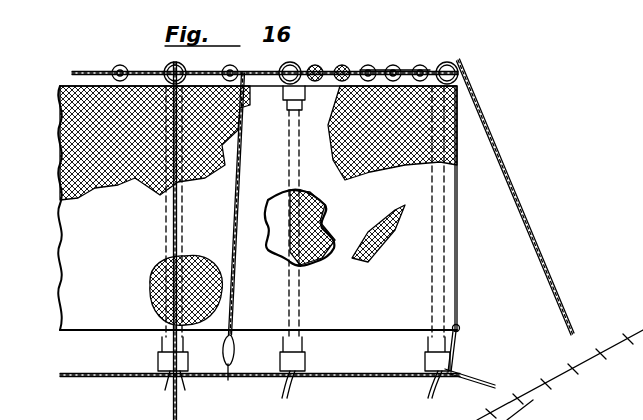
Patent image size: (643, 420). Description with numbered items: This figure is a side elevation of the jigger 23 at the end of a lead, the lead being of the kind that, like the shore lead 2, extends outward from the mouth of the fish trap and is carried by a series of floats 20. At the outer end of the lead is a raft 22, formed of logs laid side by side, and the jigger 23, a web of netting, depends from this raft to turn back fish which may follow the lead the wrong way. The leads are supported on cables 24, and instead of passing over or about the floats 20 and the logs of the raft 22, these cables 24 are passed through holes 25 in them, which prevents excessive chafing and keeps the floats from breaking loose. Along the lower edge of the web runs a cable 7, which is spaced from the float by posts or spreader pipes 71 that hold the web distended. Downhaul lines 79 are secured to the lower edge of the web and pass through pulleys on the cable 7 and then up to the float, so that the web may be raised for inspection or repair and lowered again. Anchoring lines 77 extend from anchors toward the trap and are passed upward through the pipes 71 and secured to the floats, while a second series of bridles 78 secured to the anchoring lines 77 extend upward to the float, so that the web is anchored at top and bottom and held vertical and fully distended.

The shore lead 2 is at (636, 340).
The cable 7 is at (370, 377).
The floats 20 is at (125, 67).
The raft 22 is at (386, 71).
The jigger 23 is at (417, 245).
The cables 24 is at (80, 71).
The holes 25 is at (344, 67).
The spreader pipes 71 is at (430, 335).
The anchoring lines 77 is at (170, 382).
The bridles 78 is at (172, 218).
The downhaul lines 79 is at (240, 170).